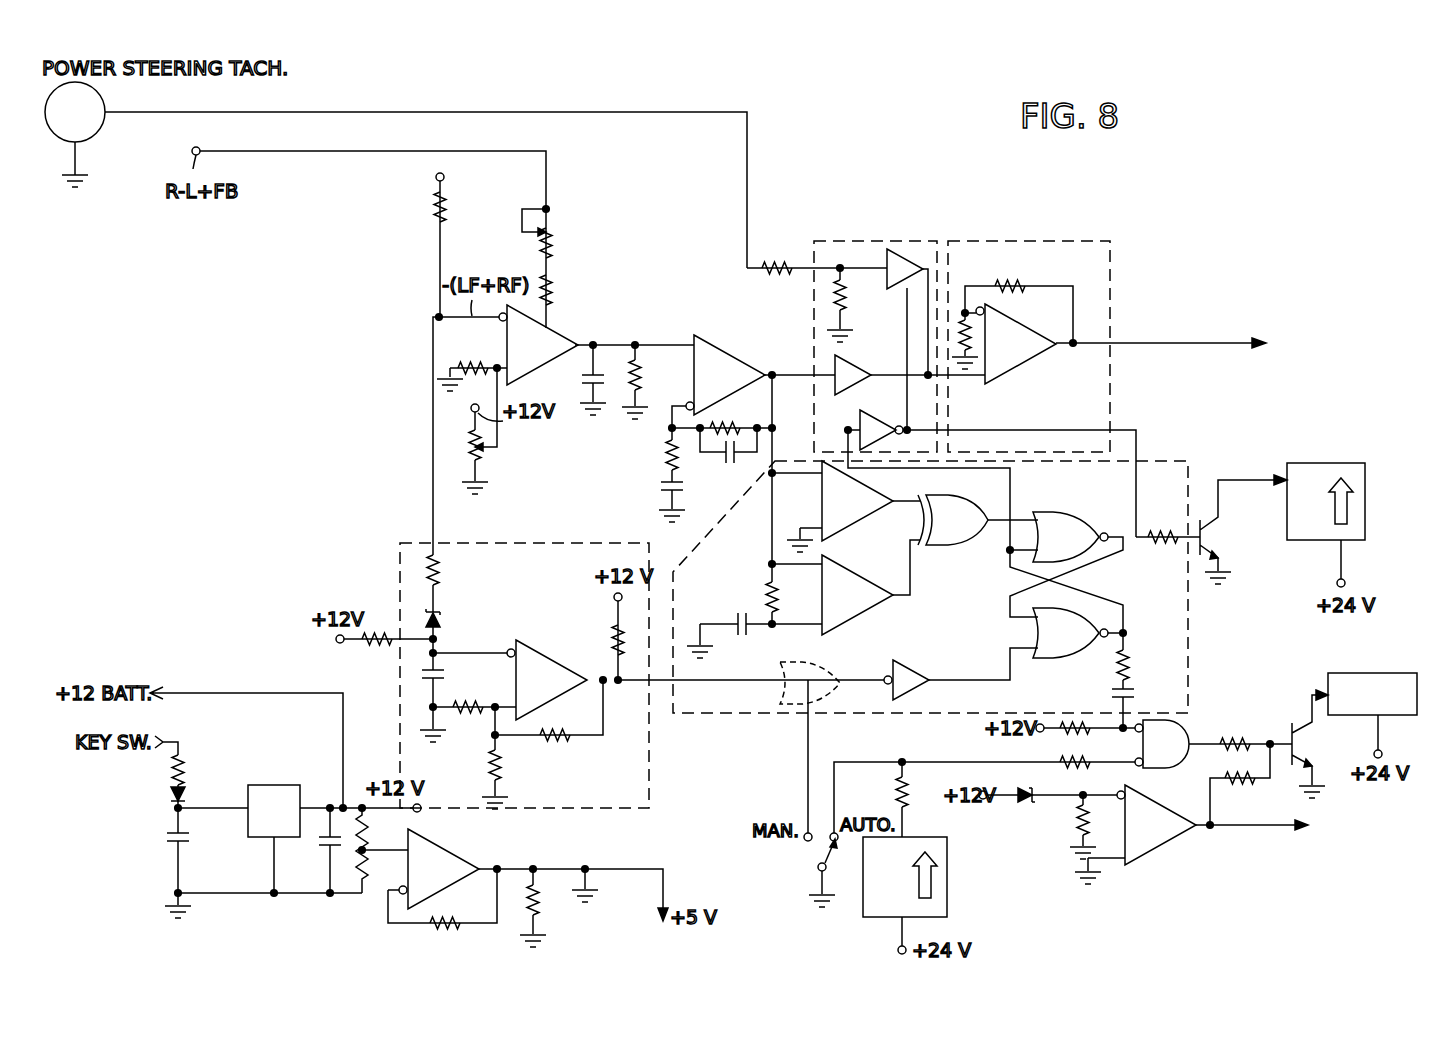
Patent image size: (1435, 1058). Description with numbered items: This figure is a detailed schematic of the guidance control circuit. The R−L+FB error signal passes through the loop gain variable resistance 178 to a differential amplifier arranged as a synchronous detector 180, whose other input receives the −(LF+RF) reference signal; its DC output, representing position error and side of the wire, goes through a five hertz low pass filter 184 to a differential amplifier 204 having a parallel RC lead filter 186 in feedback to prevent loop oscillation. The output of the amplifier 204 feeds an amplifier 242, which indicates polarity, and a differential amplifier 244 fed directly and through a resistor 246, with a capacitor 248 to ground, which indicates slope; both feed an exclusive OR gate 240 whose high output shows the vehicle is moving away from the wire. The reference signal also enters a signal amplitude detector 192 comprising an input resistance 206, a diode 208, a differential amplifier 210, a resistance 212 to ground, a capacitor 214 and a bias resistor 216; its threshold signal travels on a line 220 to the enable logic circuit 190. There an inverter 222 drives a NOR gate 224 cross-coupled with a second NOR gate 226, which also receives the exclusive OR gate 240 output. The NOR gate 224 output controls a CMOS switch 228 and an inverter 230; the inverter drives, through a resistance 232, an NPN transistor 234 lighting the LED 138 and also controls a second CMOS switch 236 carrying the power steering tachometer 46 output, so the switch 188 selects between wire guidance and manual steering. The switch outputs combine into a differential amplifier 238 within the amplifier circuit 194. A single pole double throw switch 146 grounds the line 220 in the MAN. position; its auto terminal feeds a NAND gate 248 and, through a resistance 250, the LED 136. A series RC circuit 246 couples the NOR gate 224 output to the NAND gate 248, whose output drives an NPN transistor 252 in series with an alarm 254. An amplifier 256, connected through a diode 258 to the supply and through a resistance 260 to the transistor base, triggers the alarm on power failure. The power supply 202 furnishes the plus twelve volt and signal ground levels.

The power steering tachometer 46 is at (100, 135).
The loop gain variable resistance 178 is at (555, 232).
The synchronous detector 180 is at (542, 345).
The low pass filter 184 is at (605, 428).
The lead filter 186 is at (714, 466).
The single pole double throw electronic switch 188 is at (878, 240).
The second CMOS switch 236 is at (912, 262).
The amplifier circuit 194 is at (1038, 240).
The CMOS switch 228 is at (848, 366).
The inverter 230 is at (890, 418).
The differential amplifier 238 is at (1020, 344).
The differential amplifier 204 is at (729, 375).
The enable logic circuit 190 is at (1188, 461).
The resistance 232 is at (1154, 531).
The NPN transistor 234 is at (1208, 544).
The LED 138 is at (1365, 509).
The amplifier 242 is at (857, 501).
The differential amplifier 244 is at (857, 595).
The exclusive OR gate 240 is at (953, 520).
The second NOR gate 226 is at (1070, 537).
The NOR gate 224 is at (1070, 633).
The resistor 246 is at (770, 588).
The capacitor 248 is at (732, 622).
The inverter 222 is at (930, 656).
The line 220 is at (668, 686).
The signal amplitude detector 192 is at (544, 543).
The input resistance 206 is at (444, 558).
The diode 208 is at (444, 620).
The capacitor 214 is at (440, 668).
The resistor 216 is at (376, 644).
The differential amplifier 210 is at (551, 680).
The resistance 212 is at (468, 714).
The power supply 202 is at (261, 782).
The resistance 250 is at (895, 798).
The single pole double throw switch 146 is at (820, 859).
The LED 136 is at (947, 885).
The diode 258 is at (1030, 802).
The amplifier 256 is at (1160, 825).
The resistance 260 is at (1240, 784).
The NPN transistor 252 is at (1290, 725).
The alarm 254 is at (1384, 673).